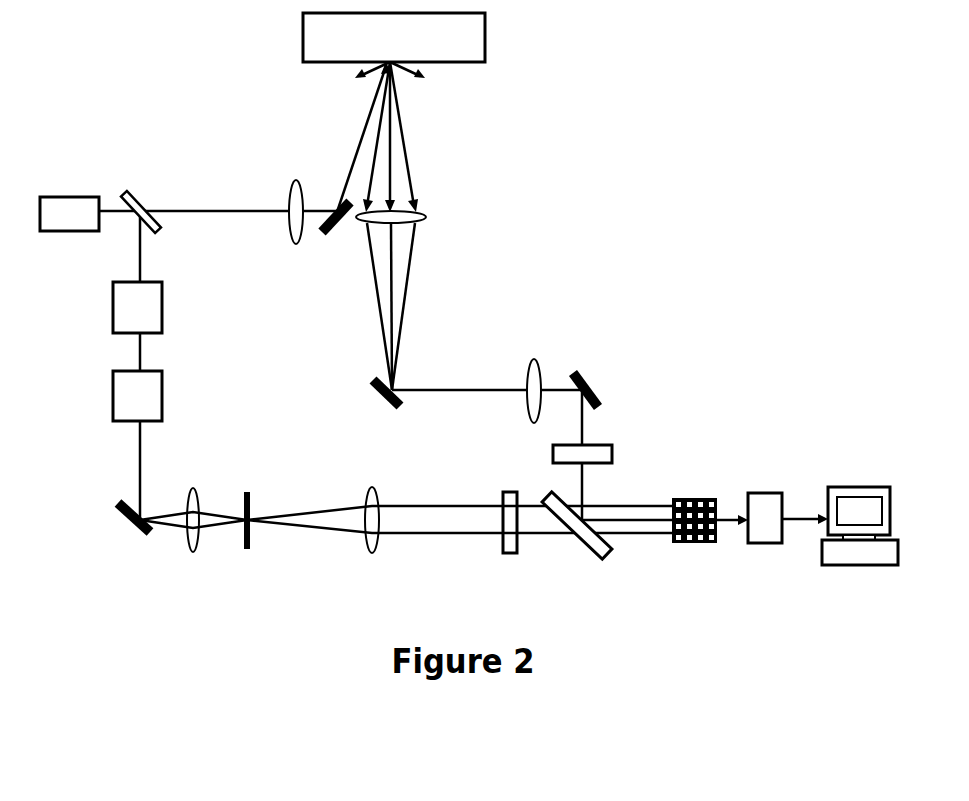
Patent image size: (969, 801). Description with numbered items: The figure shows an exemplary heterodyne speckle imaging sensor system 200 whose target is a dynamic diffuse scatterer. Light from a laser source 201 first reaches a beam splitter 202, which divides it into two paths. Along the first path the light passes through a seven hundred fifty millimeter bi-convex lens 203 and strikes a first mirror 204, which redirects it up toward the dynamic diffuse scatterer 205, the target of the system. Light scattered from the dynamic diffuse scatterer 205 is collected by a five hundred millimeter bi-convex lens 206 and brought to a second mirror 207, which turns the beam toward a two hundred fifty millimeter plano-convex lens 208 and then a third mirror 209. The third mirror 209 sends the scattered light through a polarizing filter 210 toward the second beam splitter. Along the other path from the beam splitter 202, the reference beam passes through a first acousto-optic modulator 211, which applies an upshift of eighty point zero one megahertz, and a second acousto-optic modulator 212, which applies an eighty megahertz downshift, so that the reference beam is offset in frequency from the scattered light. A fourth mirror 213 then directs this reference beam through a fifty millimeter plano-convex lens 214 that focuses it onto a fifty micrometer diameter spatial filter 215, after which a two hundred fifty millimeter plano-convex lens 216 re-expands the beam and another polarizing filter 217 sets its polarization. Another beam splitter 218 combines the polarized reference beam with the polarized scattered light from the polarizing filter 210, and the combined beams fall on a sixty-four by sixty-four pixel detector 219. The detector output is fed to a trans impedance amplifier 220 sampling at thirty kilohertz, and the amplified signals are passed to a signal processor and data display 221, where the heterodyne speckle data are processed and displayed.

The heterodyne speckle imaging sensor system 200 is at (573, 170).
The laser source 201 is at (69, 206).
The beam splitter 202 is at (141, 201).
The 750 mm bi-convex lens 203 is at (296, 224).
The first mirror 204 is at (342, 228).
The dynamic diffuse scatterer 205 is at (394, 37).
The 500 mm bi-convex lens 206 is at (412, 220).
The second mirror 207 is at (383, 403).
The 250 mm plano-convex lens 208 is at (537, 385).
The third mirror 209 is at (600, 389).
The polarizing filter 210 is at (603, 457).
The first acousto-optic modulator 211 is at (116, 307).
The second acousto-optic modulator 212 is at (116, 396).
The fourth mirror 213 is at (111, 523).
The 50 mm plano-convex lens 214 is at (191, 538).
The 50 µm diameter spatial filter 215 is at (247, 540).
The 250 mm plano-convex lens 216 is at (371, 537).
The polarizing filter 217 is at (514, 541).
The beam splitter 218 is at (579, 541).
The 64×64 pixel detector 219 is at (694, 544).
The trans impedance amplifier 220 is at (765, 541).
The signal processor and data display 221 is at (860, 537).